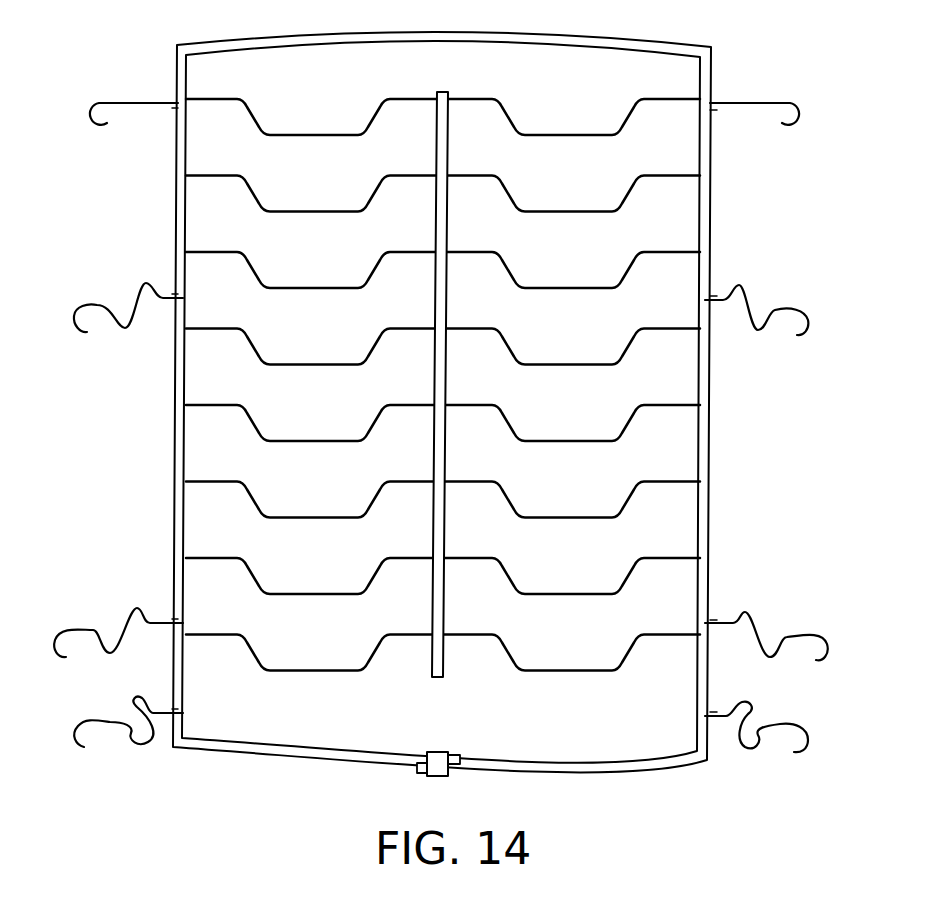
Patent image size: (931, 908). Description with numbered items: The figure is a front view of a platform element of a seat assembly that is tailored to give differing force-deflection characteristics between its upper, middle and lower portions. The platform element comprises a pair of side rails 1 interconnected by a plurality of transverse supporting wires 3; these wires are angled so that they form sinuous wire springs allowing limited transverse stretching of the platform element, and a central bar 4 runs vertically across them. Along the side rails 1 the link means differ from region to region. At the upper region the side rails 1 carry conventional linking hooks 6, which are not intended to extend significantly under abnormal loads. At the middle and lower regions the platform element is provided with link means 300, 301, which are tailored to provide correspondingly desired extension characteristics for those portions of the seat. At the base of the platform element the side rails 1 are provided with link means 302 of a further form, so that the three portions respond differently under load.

The side rail 1 is at (176, 210).
The transverse supporting wire 3 is at (513, 197).
The central support bar 4 is at (435, 235).
The linking hook 6 is at (110, 101).
The link means 300 is at (99, 305).
The link means 301 is at (88, 628).
The link means 302 is at (93, 723).